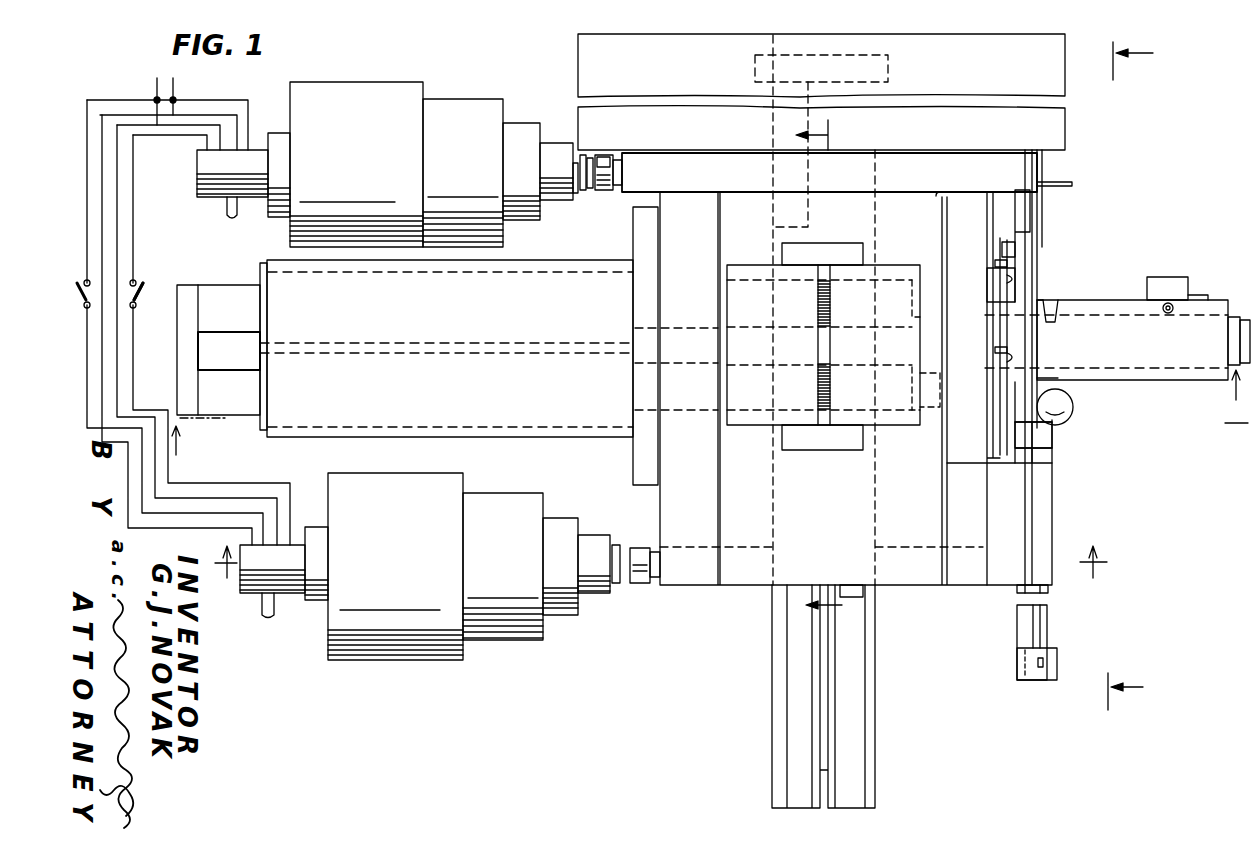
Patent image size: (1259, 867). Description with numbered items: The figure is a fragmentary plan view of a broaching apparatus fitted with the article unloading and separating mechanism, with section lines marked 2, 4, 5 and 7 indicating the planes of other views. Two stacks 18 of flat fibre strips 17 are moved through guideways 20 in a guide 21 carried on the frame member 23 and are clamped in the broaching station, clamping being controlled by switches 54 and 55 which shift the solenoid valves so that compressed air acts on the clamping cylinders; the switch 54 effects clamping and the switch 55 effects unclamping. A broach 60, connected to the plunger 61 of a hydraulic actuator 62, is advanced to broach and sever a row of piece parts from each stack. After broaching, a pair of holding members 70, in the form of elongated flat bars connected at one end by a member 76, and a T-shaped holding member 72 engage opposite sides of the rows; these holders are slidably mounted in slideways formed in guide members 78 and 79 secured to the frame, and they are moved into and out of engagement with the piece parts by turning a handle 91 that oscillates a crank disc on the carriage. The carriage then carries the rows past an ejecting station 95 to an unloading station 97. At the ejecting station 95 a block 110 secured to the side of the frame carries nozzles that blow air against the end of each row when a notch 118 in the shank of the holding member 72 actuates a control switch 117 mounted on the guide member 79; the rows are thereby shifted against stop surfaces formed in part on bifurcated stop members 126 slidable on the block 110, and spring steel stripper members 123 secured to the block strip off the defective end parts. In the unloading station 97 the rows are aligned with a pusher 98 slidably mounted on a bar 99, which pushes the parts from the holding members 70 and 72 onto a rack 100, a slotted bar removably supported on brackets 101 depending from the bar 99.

The switch 55 is at (88, 295).
The switch 54 is at (141, 291).
The hydraulic actuator 62 is at (880, 52).
The plunger 61 is at (780, 178).
The frame member 23 is at (683, 246).
The guide member 78 is at (590, 408).
The member 76 is at (192, 418).
The holding members 70 is at (240, 315).
The guide 21 is at (828, 432).
The guideways 20 is at (818, 318).
The flat strips 17 is at (832, 320).
The stacks 18 is at (832, 308).
The holding member 72 is at (885, 285).
The guide member 79 is at (1178, 374).
The notch 118 is at (1052, 312).
The control switch 117 is at (1160, 290).
The handle 91 is at (1073, 415).
The brackets 101 is at (1050, 440).
The rack 100 is at (1048, 628).
The broach 60 is at (865, 678).
The bifurcated stop members 126 is at (1005, 263).
The stripper members 123 is at (995, 267).
The block 110 is at (1002, 283).
The ejecting station 95 is at (997, 232).
The pusher 98 is at (1042, 225).
The unloading station 97 is at (1042, 243).
The bar 99 is at (1040, 277).
The section line 2- 2 is at (710, 418).
The section line 4- 4 is at (660, 558).
The section line 5- 5 is at (824, 377).
The section line 7- 7 is at (1130, 375).